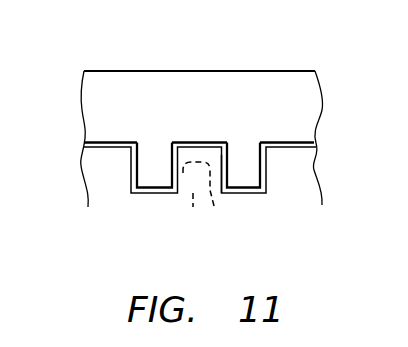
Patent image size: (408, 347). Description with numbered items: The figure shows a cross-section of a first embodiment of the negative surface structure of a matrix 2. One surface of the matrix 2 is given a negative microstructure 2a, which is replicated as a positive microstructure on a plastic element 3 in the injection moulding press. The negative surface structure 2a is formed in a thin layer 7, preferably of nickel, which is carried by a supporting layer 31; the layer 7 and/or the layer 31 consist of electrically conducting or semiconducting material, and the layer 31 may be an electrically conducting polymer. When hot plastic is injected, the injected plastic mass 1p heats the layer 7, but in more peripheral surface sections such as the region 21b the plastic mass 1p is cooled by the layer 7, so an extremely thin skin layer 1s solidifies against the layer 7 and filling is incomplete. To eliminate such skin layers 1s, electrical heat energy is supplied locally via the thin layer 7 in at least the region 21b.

The matrix 2 is at (196, 132).
The layer supporting the layer 7 31 is at (110, 85).
The plastic element 3 is at (111, 192).
The negative microstructure 2a is at (130, 195).
The region 21b is at (273, 246).
The layer 7 is at (148, 195).
The injected plastic mass 1p is at (193, 208).
The skin layer 1s is at (213, 155).